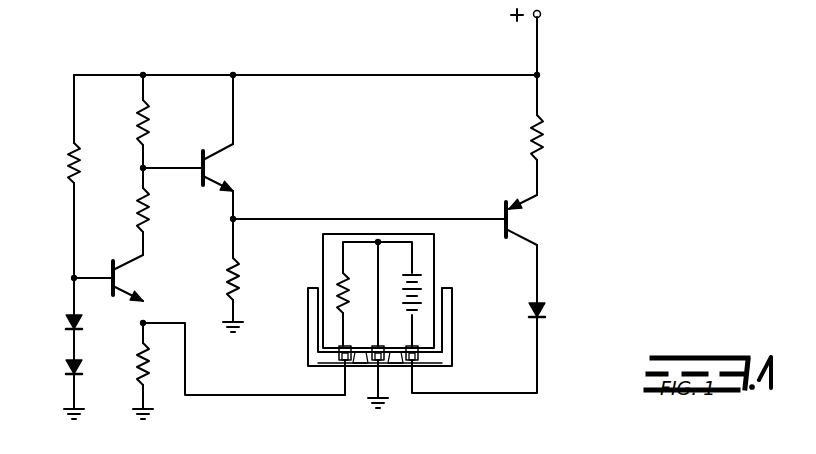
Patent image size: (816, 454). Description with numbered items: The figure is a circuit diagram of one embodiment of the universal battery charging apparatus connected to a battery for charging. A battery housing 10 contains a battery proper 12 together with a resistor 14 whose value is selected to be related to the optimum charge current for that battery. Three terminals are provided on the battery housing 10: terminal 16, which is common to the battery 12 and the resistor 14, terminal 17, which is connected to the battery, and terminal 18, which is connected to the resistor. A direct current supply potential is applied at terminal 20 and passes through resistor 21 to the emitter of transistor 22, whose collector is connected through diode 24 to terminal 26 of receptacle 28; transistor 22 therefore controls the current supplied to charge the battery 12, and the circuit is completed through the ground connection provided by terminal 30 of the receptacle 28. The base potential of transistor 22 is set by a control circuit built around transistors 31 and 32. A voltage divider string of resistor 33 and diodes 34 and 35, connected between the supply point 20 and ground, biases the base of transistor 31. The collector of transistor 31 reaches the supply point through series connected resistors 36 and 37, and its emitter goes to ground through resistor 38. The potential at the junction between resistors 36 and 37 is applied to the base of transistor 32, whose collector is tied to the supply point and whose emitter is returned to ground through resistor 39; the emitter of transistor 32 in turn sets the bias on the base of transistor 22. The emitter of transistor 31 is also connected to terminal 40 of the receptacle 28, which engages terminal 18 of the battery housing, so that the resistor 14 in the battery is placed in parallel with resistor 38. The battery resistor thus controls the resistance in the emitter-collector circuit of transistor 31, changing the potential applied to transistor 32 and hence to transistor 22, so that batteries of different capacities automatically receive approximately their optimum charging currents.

The battery housing 10 is at (435, 247).
The battery proper 12 is at (417, 290).
The resistor 14 is at (341, 284).
The terminal 16 is at (377, 346).
The terminal 17 is at (418, 348).
The terminal 18 is at (340, 349).
The terminal 20 is at (541, 15).
The resistor 21 is at (542, 132).
The transistor 22 is at (528, 222).
The diode 24 is at (546, 311).
The terminal 26 is at (418, 362).
The receptacle 28 is at (452, 355).
The terminal 30 is at (377, 364).
The transistor 31 is at (134, 281).
The transistor 32 is at (224, 170).
The resistor 33 is at (69, 152).
The diode 34 is at (67, 322).
The diode 35 is at (67, 366).
The resistor 36 is at (150, 120).
The resistor 37 is at (148, 222).
The resistor 38 is at (139, 365).
The resistor 39 is at (240, 281).
The terminal 40 is at (345, 366).